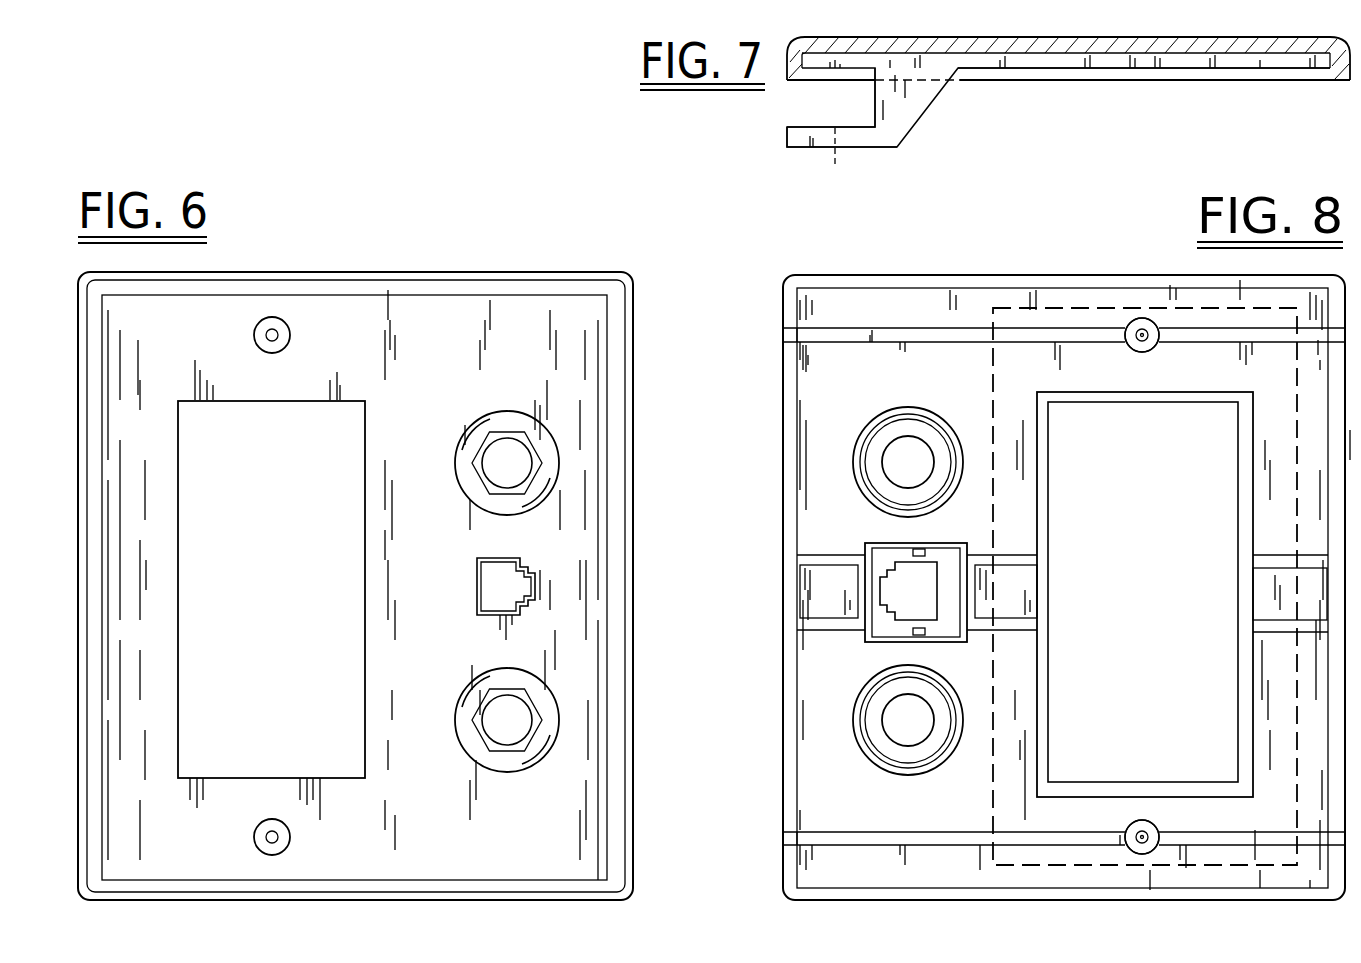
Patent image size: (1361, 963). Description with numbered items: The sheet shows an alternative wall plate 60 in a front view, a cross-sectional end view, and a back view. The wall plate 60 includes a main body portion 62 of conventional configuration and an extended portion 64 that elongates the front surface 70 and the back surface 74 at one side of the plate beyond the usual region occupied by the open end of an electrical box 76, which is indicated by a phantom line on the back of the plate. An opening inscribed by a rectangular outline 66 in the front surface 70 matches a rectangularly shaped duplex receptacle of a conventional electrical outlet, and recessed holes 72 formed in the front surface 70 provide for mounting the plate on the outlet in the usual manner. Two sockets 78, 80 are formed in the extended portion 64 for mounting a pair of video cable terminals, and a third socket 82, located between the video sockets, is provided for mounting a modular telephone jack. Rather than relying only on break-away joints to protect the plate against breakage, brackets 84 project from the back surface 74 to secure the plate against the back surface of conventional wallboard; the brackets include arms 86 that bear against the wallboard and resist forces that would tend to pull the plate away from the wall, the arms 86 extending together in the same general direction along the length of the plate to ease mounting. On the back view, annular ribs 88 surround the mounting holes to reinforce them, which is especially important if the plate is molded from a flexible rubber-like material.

In FIG. 7, the wall plate 60 is at (1250, 87).
In FIG. 6, the wall plate 60 is at (532, 260).
In FIG. 8, the wall plate 60 is at (1104, 263).
In FIG. 6, the main body portion 62 is at (100, 330).
In FIG. 8, the main body portion 62 is at (1272, 365).
In FIG. 6, the extended portion 64 is at (592, 335).
In FIG. 8, the extended portion 64 is at (818, 300).
In FIG. 6, the rectangular outline 66 is at (178, 489).
In FIG. 7, the front surface 70 is at (1028, 36).
In FIG. 6, the front surface 70 is at (408, 850).
In FIG. 6, the recessed holes 72 is at (290, 332).
In FIG. 8, the recessed holes 72 is at (1136, 350).
In FIG. 7, the back surface 74 is at (1101, 56).
In FIG. 8, the back surface 74 is at (998, 827).
In FIG. 8, the electrical box 76 is at (1297, 701).
In FIG. 6, the socket 78 is at (468, 426).
In FIG. 8, the socket 78 is at (912, 403).
In FIG. 6, the socket 80 is at (545, 760).
In FIG. 8, the socket 80 is at (923, 775).
In FIG. 6, the third socket 82 is at (477, 580).
In FIG. 8, the third socket 82 is at (869, 644).
In FIG. 7, the brackets 84 is at (826, 150).
In FIG. 8, the brackets 84 is at (820, 329).
In FIG. 7, the arms 86 is at (845, 150).
In FIG. 8, the arms 86 is at (826, 345).
In FIG. 8, the annular rib 88 is at (1160, 350).